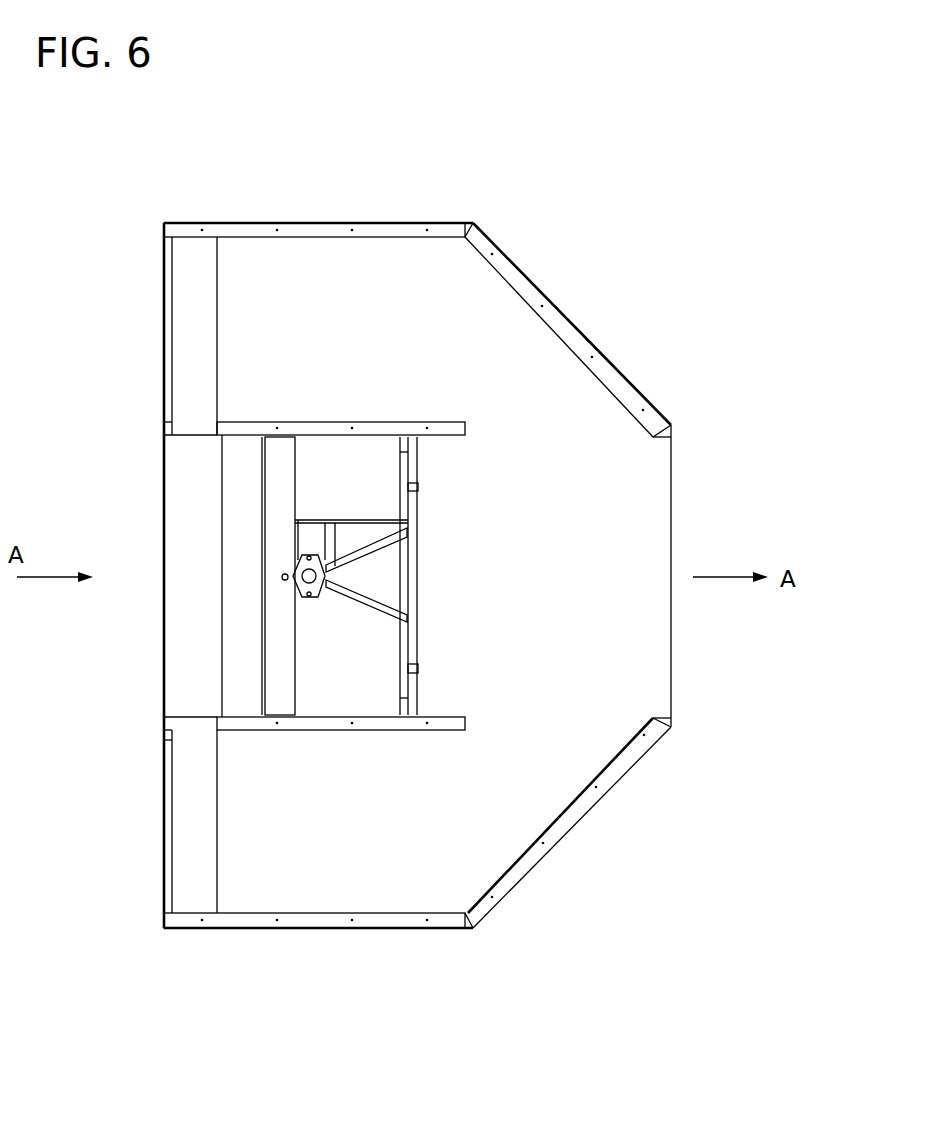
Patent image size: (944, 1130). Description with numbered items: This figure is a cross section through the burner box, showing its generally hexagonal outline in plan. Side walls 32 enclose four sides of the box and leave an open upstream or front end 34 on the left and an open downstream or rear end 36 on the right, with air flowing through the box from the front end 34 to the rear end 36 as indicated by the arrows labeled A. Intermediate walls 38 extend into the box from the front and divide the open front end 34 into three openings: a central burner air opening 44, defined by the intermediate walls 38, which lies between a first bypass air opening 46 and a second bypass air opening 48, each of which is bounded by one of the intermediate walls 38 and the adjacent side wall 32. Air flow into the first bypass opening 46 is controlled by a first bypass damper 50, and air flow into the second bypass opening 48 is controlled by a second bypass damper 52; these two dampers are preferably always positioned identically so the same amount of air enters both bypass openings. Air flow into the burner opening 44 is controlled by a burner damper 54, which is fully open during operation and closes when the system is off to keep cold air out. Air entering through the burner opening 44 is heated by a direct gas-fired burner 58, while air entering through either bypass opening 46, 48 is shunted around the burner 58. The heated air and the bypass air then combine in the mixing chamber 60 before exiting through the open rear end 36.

The side walls 32 is at (375, 223).
The open front end 34 is at (132, 626).
The open rear end 36 is at (680, 495).
The intermediate walls 38 is at (345, 422).
The burner air opening 44 is at (192, 717).
The first bypass air opening 46 is at (188, 913).
The second bypass air opening 48 is at (184, 238).
The first bypass damper 50 is at (188, 783).
The second bypass damper 52 is at (195, 352).
The burner damper 54 is at (190, 495).
The direct gas-fired burner 58 is at (365, 600).
The mixing chamber 60 is at (560, 612).